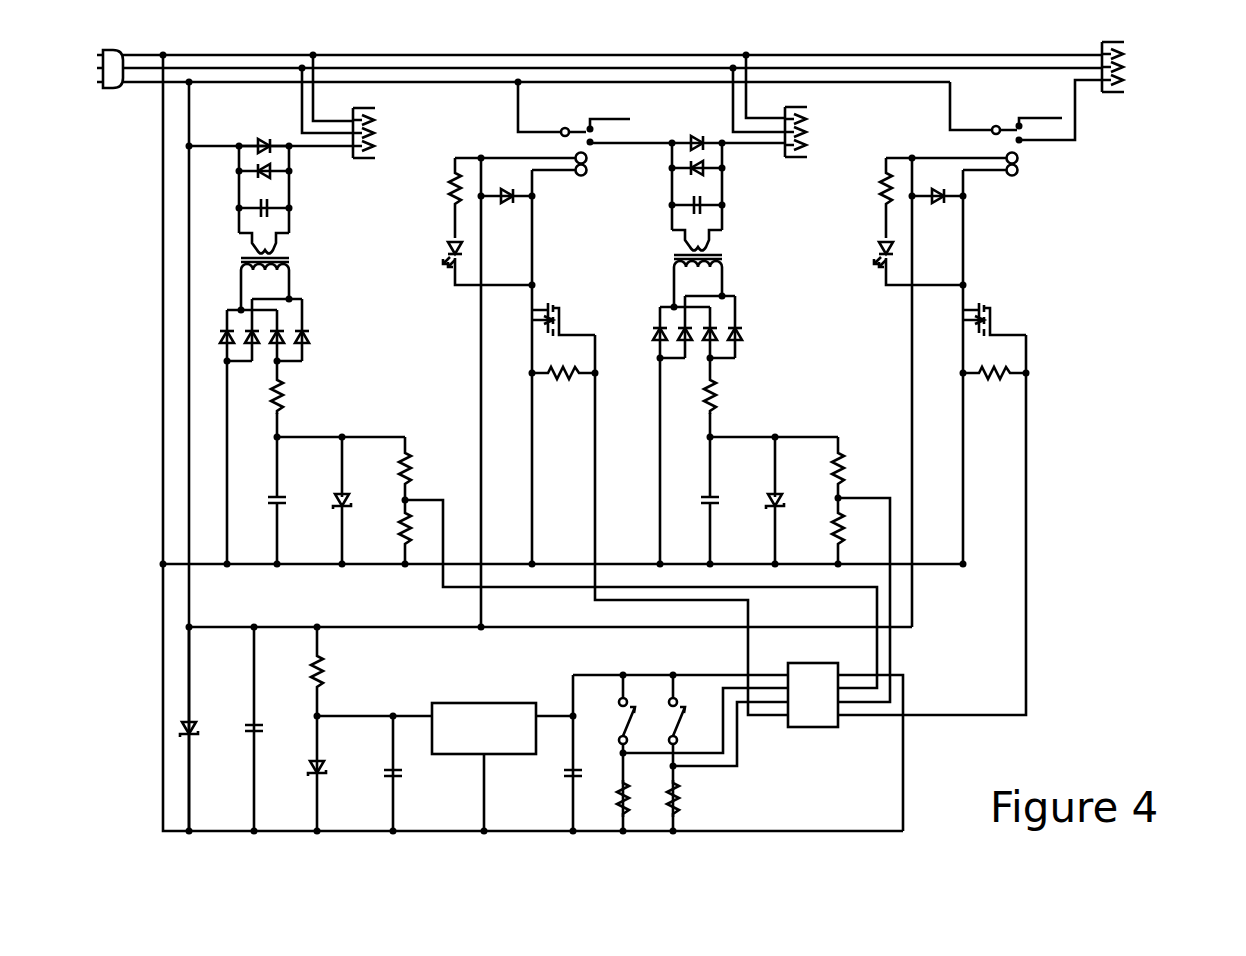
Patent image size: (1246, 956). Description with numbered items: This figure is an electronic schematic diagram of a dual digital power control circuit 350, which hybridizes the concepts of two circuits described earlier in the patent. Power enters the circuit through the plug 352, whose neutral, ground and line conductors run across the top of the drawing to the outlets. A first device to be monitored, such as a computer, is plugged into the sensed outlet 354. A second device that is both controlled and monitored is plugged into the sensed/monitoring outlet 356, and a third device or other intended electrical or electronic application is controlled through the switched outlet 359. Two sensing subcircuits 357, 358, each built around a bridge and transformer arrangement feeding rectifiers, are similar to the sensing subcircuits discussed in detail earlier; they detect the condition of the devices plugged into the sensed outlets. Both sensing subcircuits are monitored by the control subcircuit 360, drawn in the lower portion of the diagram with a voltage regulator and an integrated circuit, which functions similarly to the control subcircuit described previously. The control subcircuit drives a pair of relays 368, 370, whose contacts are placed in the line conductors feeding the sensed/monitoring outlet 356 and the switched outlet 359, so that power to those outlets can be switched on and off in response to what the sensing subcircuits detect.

The dual digital power control circuit 350 is at (167, 855).
The plug 352 is at (116, 88).
The sensed outlet 354 is at (358, 158).
The sensed/monitoring outlet 356 is at (793, 155).
The sensing subcircuit 357 is at (336, 283).
The sensing subcircuit 358 is at (766, 281).
The switched outlet 359 is at (1108, 92).
The control subcircuit 360 is at (604, 666).
The relay 368 is at (590, 152).
The relay 370 is at (1023, 153).